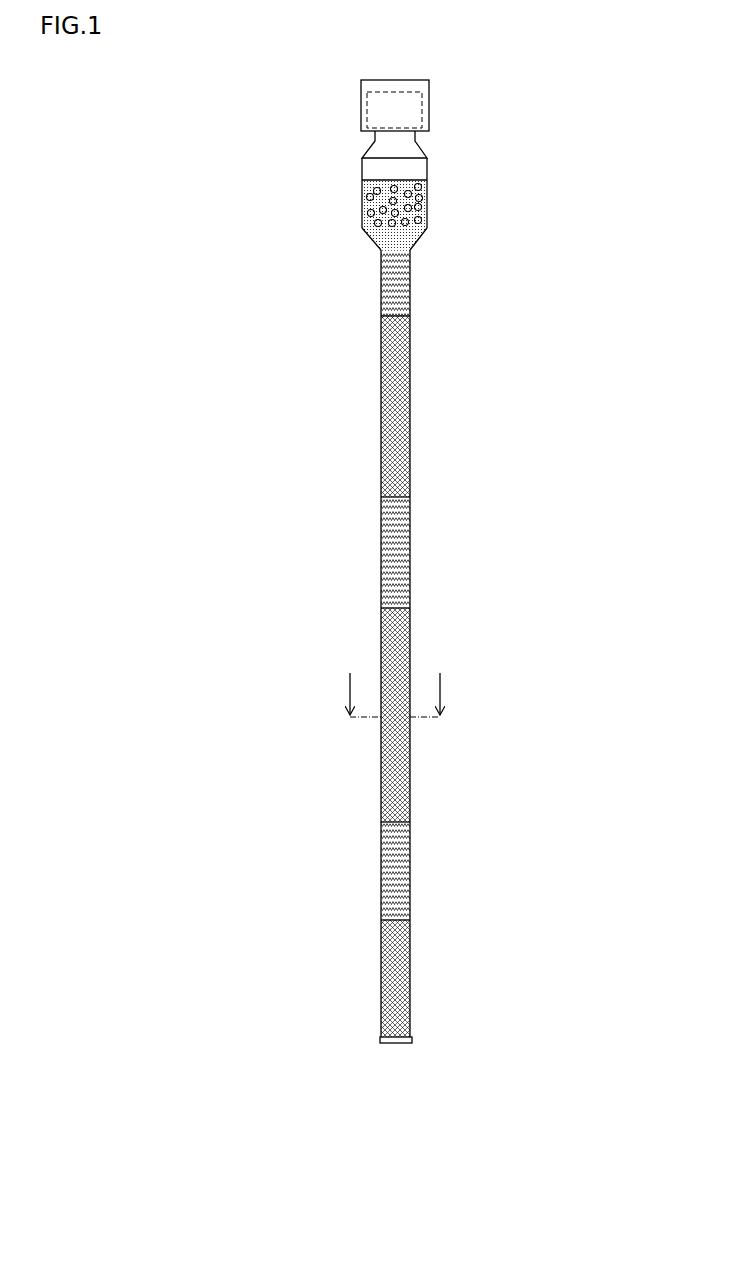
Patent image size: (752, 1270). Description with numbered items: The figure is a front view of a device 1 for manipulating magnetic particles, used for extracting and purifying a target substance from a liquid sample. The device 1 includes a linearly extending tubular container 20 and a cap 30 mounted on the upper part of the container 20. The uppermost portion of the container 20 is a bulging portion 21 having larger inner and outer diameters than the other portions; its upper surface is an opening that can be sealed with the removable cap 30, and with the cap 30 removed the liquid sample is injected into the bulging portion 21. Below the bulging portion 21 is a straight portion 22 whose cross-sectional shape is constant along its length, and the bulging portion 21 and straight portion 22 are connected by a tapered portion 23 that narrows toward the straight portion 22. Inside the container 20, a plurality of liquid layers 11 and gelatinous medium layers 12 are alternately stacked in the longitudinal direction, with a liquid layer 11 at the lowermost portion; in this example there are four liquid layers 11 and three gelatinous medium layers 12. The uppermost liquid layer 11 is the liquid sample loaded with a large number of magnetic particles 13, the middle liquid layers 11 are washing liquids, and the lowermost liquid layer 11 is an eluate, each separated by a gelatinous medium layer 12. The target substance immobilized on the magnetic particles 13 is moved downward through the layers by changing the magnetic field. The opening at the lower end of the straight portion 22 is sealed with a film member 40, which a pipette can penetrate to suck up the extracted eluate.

The device for manipulating magnetic particles 1 is at (267, 317).
The liquid layer 11 is at (363, 207).
The gelatinous medium layer 12 is at (383, 278).
The magnetic particles 13 is at (362, 188).
The tubular container 20 is at (459, 643).
The bulging portion 21 is at (430, 172).
The straight portion 22 is at (410, 355).
The tapered portion 23 is at (418, 238).
The cap 30 is at (430, 95).
The film member 40 is at (396, 1043).